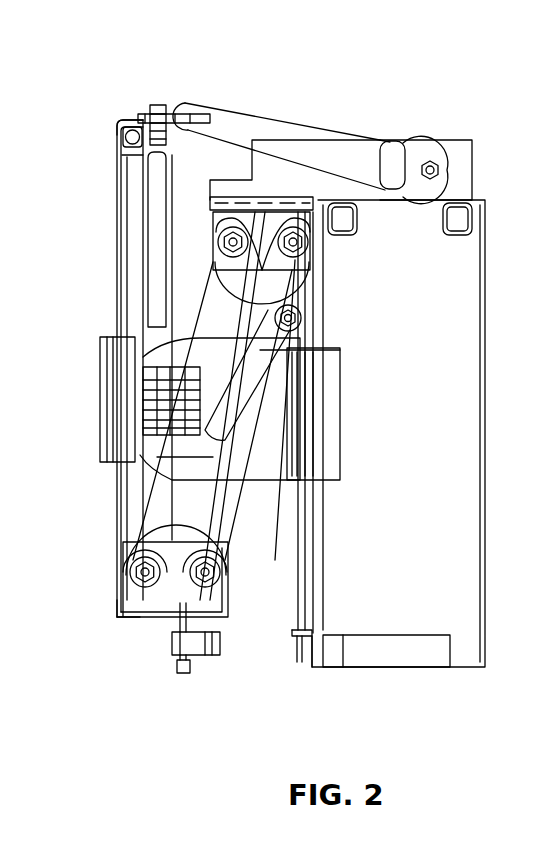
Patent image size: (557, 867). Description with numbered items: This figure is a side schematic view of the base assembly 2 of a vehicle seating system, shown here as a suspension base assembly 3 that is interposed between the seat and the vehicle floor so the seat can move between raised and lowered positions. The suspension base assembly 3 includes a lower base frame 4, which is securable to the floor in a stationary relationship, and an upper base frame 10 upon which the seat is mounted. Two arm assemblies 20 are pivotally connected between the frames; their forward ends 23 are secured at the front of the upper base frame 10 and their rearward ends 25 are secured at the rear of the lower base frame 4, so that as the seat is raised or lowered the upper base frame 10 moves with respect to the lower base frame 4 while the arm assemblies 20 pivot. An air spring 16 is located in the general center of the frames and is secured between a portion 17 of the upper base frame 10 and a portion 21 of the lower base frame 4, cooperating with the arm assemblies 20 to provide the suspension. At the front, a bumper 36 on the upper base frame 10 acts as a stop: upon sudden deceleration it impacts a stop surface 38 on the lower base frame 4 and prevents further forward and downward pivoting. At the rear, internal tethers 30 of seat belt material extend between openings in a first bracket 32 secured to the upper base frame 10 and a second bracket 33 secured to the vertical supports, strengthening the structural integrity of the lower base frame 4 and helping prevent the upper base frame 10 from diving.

The base assembly 2 is at (128, 68).
The suspension base assembly 3 is at (118, 660).
The lower base frame 4 is at (490, 430).
The upper base frame 10 is at (106, 280).
The air spring 16 is at (140, 420).
The portion of the upper base frame 17 is at (100, 462).
The arm assemblies 20 is at (135, 560).
The portion of the lower base frame 21 is at (330, 478).
The forward ends 23 is at (124, 590).
The rearward ends 25 is at (312, 240).
The internal tethers 30 is at (326, 118).
The first bracket 32 is at (174, 108).
The second bracket 33 is at (414, 150).
The bumper 36 is at (233, 648).
The stop surface 38 is at (306, 652).